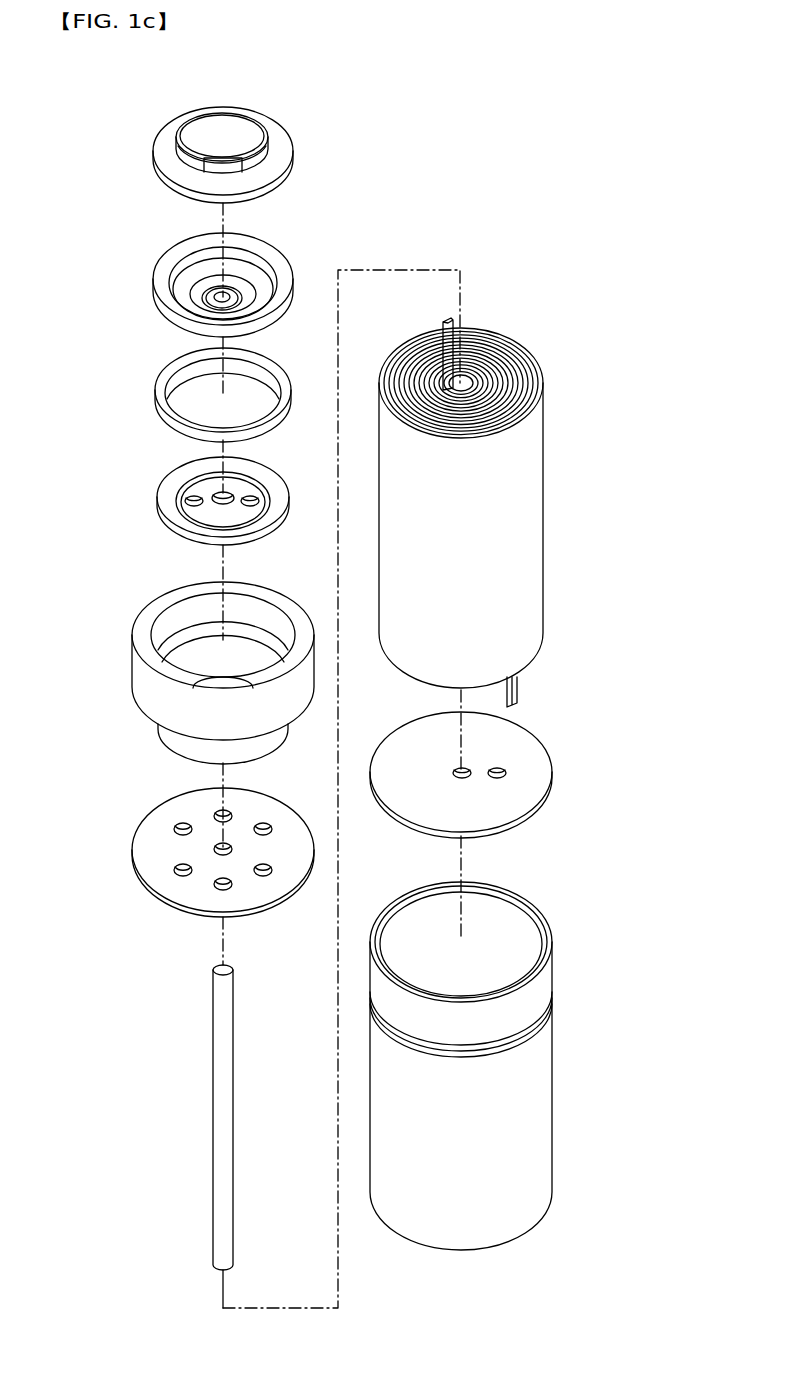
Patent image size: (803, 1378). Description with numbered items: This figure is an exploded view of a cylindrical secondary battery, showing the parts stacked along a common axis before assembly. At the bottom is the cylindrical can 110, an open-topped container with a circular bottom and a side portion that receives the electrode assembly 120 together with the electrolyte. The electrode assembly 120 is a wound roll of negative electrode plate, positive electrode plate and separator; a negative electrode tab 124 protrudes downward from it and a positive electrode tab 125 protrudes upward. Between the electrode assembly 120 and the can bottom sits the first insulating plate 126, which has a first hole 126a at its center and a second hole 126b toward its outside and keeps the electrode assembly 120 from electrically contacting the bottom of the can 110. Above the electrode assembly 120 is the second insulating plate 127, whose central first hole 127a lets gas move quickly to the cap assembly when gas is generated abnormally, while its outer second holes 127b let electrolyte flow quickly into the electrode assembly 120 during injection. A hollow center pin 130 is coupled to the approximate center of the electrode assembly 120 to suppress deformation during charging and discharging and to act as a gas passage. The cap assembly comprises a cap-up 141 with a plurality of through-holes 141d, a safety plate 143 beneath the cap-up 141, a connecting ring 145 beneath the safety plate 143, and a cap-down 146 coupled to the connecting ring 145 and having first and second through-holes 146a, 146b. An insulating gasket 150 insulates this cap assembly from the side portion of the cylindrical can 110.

The cylindrical can 110 is at (554, 1100).
The electrode assembly 120 is at (503, 493).
The negative electrode tab 124 is at (518, 684).
The positive electrode tab 125 is at (447, 322).
The first insulating plate 126 is at (507, 789).
The first hole 126a is at (466, 768).
The second hole 126b is at (505, 770).
The second insulating plate 127 is at (179, 842).
The first hole 127a is at (214, 848).
The second hole 127b is at (183, 823).
The center pin 130 is at (213, 1108).
The cap-up 141 is at (195, 133).
The through-hole 141d is at (212, 166).
The safety plate 143 is at (160, 275).
The connecting ring 145 is at (160, 393).
The cap-down 146 is at (178, 502).
The first through-hole 146a is at (220, 492).
The second through-hole 146b is at (190, 497).
The insulating gasket 150 is at (135, 674).